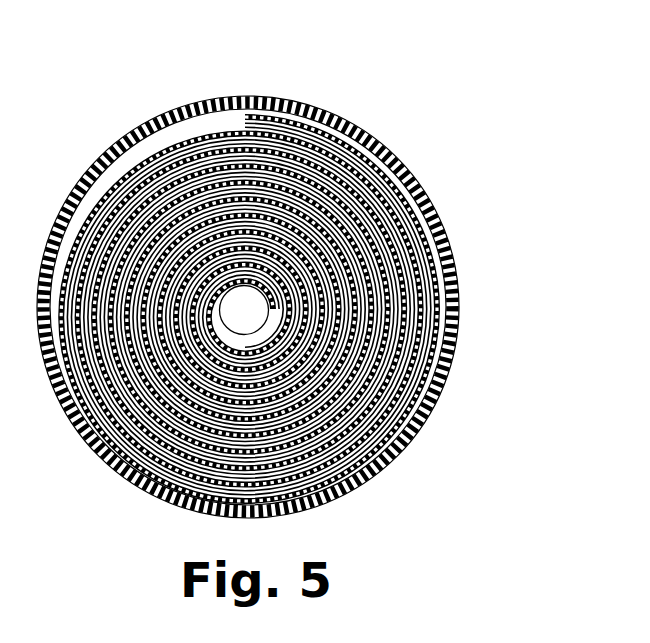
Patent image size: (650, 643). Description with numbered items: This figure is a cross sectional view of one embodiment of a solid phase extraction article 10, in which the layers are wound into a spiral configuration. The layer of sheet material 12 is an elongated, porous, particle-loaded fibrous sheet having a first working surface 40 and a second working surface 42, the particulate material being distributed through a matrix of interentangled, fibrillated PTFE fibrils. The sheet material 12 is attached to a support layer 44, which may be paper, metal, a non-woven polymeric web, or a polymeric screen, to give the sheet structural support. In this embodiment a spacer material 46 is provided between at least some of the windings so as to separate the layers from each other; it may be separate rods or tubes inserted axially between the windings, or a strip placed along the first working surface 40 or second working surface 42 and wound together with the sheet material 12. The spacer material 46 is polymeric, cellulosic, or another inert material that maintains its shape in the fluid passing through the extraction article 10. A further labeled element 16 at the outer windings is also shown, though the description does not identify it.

The solid phase extraction article 10 is at (280, 279).
The sheet material 12 is at (260, 288).
The spacer sheet 16 is at (280, 103).
The first working surface 40 is at (437, 281).
The second working surface 42 is at (296, 140).
The support layer 44 is at (399, 173).
The spacer material 46 is at (415, 238).